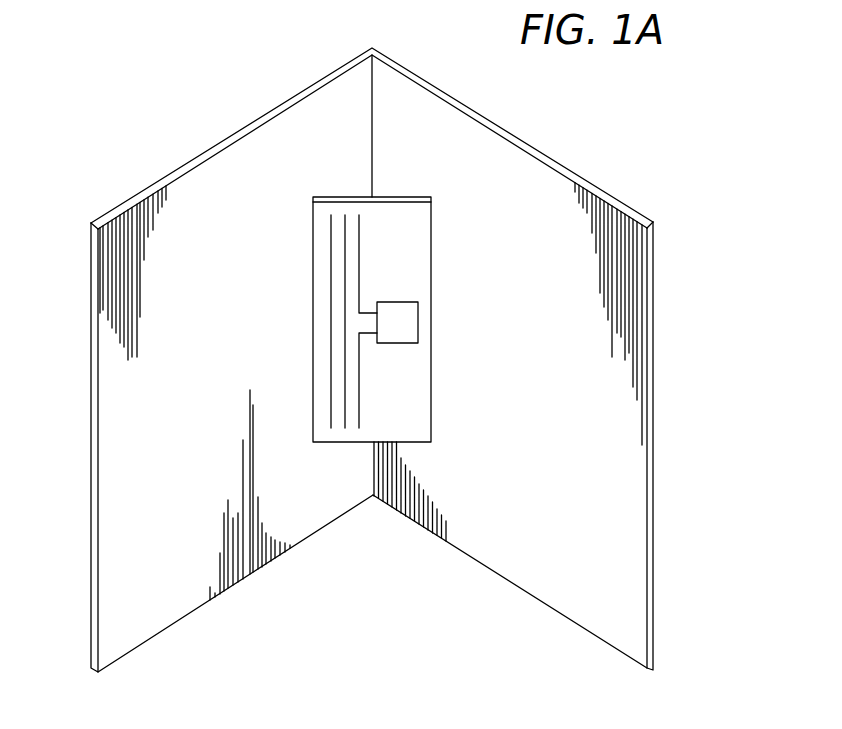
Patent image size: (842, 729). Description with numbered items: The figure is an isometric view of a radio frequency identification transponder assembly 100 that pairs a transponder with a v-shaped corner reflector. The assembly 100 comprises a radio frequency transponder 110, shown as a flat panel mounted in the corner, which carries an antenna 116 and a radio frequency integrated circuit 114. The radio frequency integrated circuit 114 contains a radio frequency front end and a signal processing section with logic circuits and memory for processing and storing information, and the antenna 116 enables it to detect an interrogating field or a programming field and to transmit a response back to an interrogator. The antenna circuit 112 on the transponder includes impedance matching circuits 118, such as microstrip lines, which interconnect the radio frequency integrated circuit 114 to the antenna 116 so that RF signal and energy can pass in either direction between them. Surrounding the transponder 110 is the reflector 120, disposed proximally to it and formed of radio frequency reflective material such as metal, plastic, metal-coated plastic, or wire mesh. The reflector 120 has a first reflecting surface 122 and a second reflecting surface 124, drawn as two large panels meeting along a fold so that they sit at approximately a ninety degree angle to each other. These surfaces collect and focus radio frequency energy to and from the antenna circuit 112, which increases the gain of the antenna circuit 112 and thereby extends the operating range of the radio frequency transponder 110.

The radio frequency identification transponder assembly 100 is at (133, 135).
The radio frequency transponder 110 is at (431, 368).
The antenna circuit 112 is at (336, 335).
The radio frequency integrated circuit 114 is at (397, 343).
The antenna 116 is at (359, 245).
The impedance matching circuits 118 is at (331, 236).
The reflector 120 is at (202, 200).
The first reflecting surface 122 is at (170, 591).
The second reflecting surface 124 is at (563, 559).